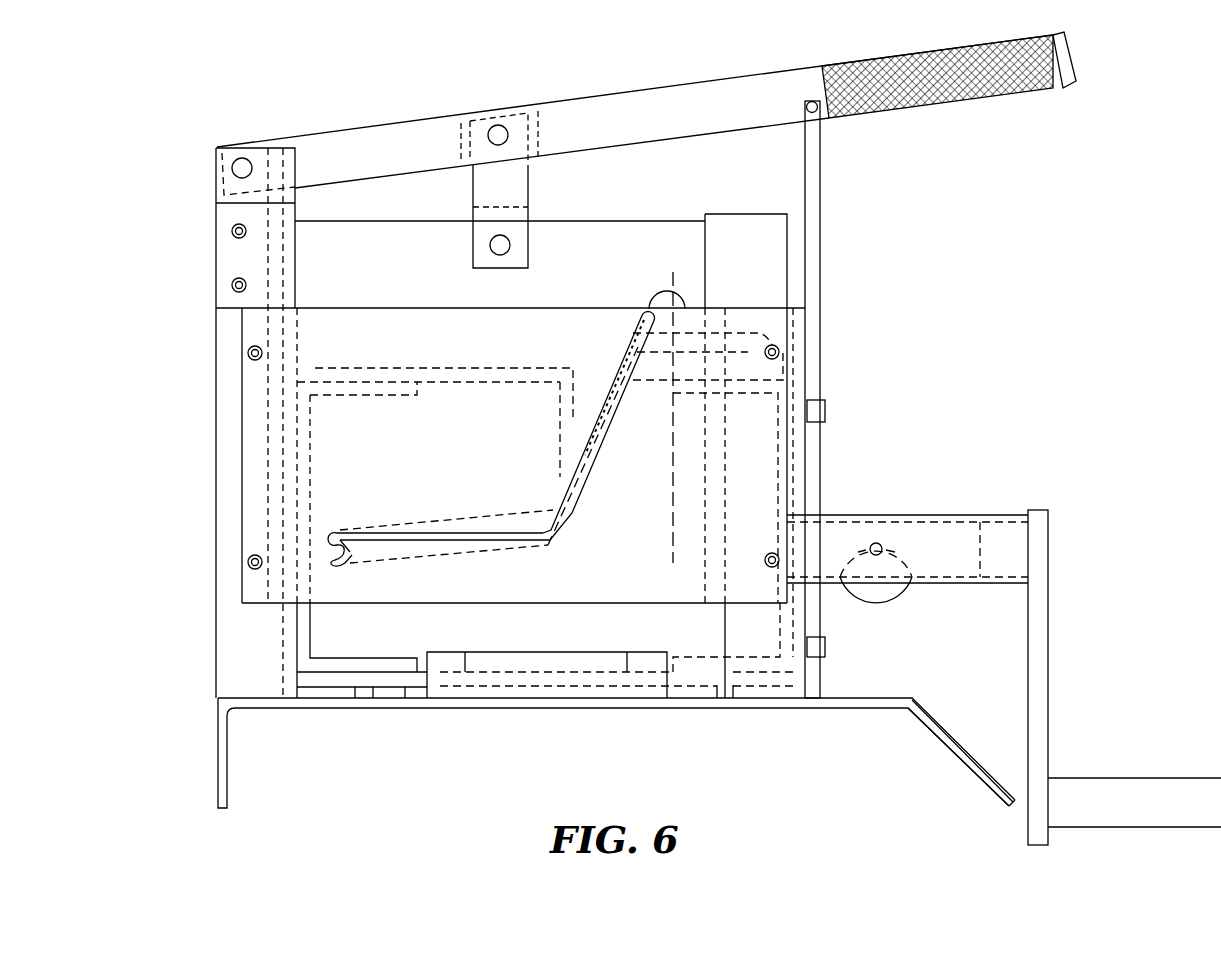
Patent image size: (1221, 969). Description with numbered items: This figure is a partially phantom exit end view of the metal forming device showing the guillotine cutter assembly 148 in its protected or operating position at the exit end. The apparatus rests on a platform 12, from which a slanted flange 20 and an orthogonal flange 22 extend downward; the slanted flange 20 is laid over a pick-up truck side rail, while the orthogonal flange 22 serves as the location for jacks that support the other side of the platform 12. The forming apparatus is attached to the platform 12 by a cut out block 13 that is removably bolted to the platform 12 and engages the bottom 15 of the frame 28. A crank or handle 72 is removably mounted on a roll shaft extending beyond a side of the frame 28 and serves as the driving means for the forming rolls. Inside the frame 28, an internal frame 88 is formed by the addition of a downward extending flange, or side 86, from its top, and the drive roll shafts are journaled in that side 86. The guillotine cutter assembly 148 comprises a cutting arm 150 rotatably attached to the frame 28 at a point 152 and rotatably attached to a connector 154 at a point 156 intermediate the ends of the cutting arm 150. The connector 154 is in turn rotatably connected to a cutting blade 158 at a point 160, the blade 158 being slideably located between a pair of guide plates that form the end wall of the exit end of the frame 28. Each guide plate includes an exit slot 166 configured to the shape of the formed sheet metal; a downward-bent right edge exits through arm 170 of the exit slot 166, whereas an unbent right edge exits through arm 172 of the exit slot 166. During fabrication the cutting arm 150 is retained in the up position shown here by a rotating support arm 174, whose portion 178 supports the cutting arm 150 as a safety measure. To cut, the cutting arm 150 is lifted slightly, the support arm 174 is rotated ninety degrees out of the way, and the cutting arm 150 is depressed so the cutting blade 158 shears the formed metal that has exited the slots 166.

The platform 12 is at (577, 700).
The cut out block 13 is at (645, 663).
The bottom of frame 15 is at (400, 680).
The slanted flange 20 is at (928, 718).
The orthogonal flange 22 is at (222, 762).
The frame 28 is at (225, 256).
The crank or handle 72 is at (1160, 787).
The side of internal frame 86 is at (560, 433).
The internal frame 88 is at (515, 372).
The guillotine cutter assembly 148 is at (848, 382).
The cutting arm 150 is at (1002, 100).
The point 152 is at (242, 158).
The connector 154 is at (482, 194).
The point 156 is at (498, 125).
The cutting blade 158 is at (650, 227).
The point 160 is at (513, 246).
The exit slot 166 is at (522, 530).
The arm of exit slot 170 is at (348, 565).
The arm of exit slot 172 is at (337, 532).
The rotating support arm 174 is at (810, 257).
The portion of support arm 178 is at (810, 102).